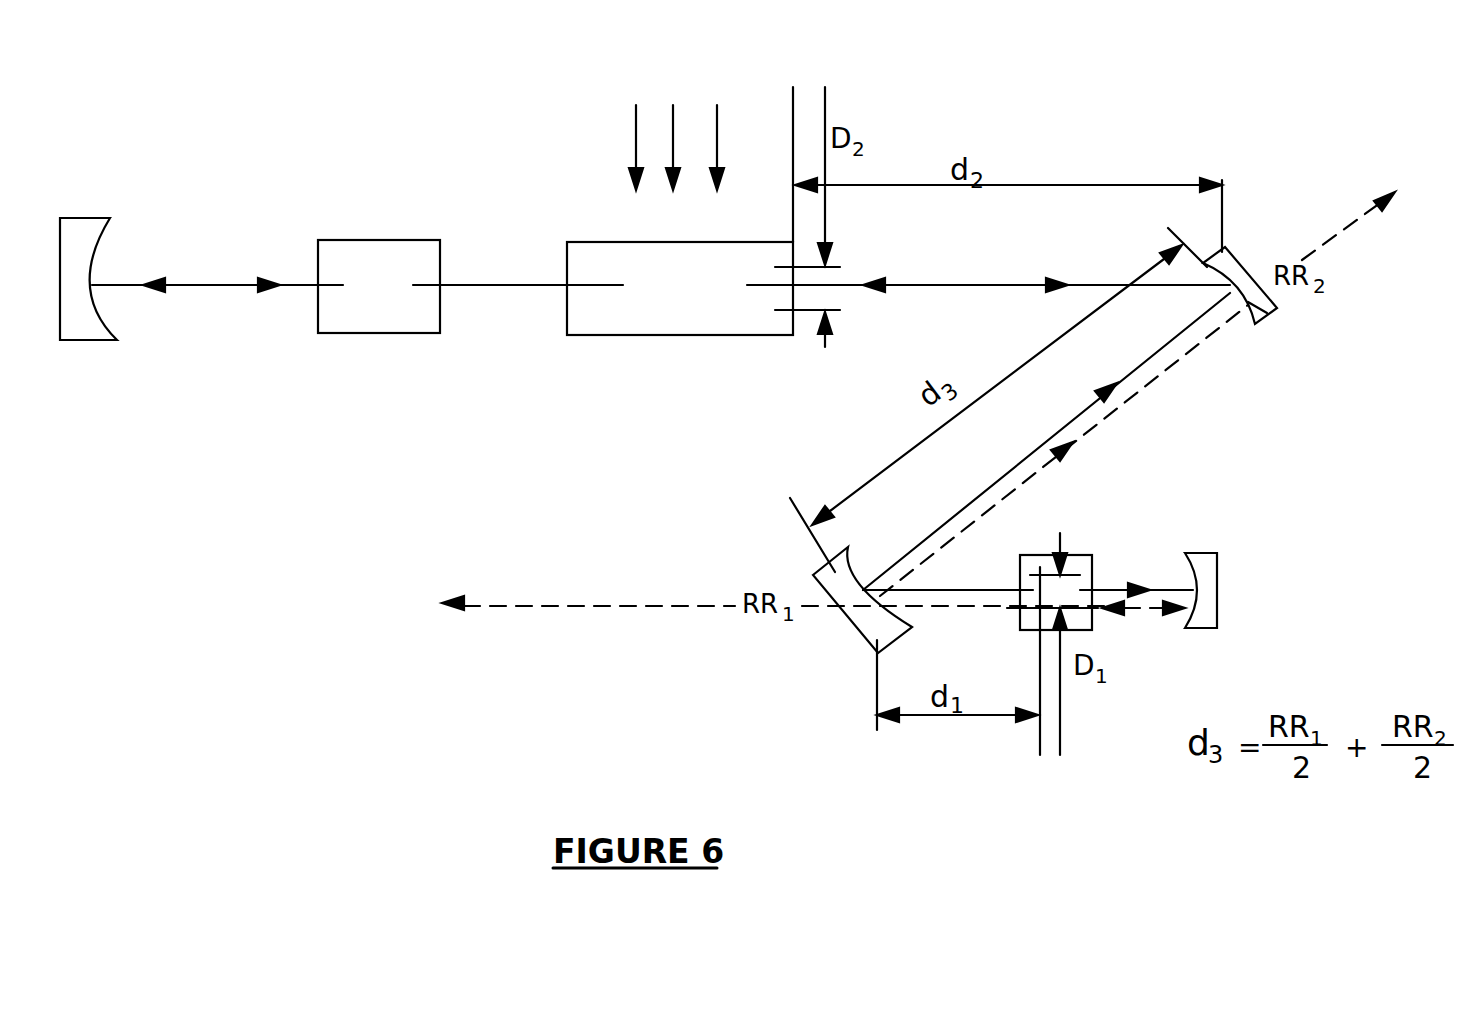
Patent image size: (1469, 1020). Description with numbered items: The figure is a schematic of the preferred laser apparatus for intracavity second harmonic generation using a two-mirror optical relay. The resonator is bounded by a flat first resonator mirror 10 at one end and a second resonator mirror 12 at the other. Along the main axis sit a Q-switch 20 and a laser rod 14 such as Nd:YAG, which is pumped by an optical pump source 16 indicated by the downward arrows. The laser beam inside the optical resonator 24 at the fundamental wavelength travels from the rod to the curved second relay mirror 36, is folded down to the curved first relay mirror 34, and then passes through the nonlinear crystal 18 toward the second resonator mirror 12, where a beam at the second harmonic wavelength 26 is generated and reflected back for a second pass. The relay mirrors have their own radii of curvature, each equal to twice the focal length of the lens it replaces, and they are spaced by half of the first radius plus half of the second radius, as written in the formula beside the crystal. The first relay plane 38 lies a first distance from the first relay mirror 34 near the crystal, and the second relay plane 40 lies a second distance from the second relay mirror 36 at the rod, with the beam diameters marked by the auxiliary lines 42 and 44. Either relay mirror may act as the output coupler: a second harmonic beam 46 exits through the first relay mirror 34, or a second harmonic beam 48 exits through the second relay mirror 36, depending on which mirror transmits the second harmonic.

The first resonator mirror 10 is at (70, 220).
The second resonator mirror 12 is at (1213, 587).
The laser rod 14 is at (597, 245).
The optical pump source 16 is at (628, 123).
The nonlinear crystal 18 is at (1070, 557).
The Q-switch 20 is at (352, 245).
The laser beam inside the optical resonator 24 is at (1147, 588).
The beam at the second harmonic wavelength 26 is at (1140, 607).
The first relay mirror 34 is at (850, 622).
The second relay mirror 36 is at (1263, 313).
The first relay plane 38 is at (1038, 723).
The second relay plane 40 is at (792, 115).
The reference line 42 is at (1062, 745).
The reference line 44 is at (827, 105).
The external second harmonic beam 46 is at (442, 605).
The external second harmonic beam 48 is at (1368, 210).